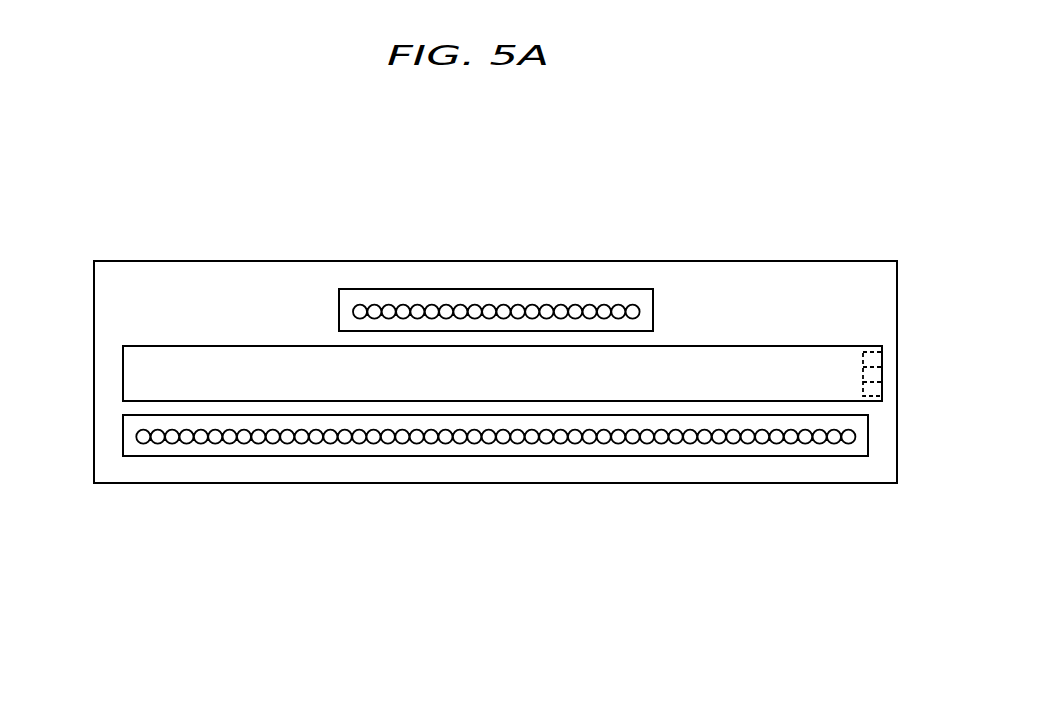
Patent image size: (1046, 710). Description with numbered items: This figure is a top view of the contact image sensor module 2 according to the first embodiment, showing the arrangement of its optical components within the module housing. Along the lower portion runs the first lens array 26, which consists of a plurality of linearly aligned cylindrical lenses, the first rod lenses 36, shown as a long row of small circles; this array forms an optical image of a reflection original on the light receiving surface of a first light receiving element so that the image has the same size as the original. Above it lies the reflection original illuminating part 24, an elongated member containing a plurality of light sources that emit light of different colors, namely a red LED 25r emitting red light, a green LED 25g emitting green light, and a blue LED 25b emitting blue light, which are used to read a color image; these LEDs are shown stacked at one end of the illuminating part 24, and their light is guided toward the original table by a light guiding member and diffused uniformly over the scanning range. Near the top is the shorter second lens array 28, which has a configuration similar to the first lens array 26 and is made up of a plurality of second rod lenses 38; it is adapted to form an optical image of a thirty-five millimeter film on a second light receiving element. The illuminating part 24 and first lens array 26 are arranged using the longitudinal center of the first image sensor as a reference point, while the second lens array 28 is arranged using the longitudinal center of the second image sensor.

The contact image sensor module 2 is at (865, 233).
The reflection original illuminating part 24 is at (133, 372).
The blue LED 25b is at (884, 352).
The green LED 25g is at (884, 374).
The red LED 25r is at (884, 392).
The first lens array 26 is at (123, 443).
The second lens array 28 is at (339, 302).
The first rod lens 36 is at (863, 541).
The second rod lens 38 is at (633, 312).